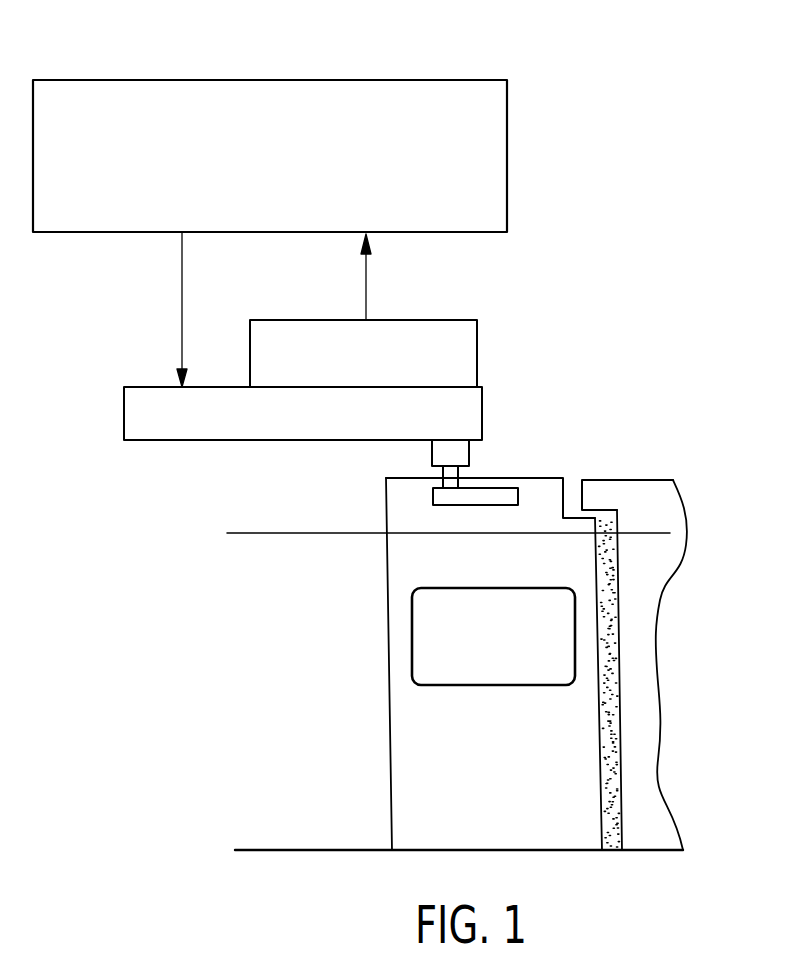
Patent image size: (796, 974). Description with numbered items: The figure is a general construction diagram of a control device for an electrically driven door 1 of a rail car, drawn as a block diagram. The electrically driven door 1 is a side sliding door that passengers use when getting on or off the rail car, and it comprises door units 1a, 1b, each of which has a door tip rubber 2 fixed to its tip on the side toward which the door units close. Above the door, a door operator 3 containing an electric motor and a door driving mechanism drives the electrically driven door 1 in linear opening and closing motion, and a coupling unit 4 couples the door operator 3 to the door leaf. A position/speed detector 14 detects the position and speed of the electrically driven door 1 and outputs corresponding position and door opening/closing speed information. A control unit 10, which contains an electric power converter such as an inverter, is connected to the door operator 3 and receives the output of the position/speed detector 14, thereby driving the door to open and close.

The control unit 10 is at (437, 80).
The position/speed detector 14 is at (424, 320).
The door operator 3 is at (123, 410).
The coupling unit 4 is at (433, 493).
The electrically driven door 1 is at (450, 664).
The door unit 1a is at (402, 755).
The door unit 1b is at (660, 588).
The door tip rubber 2 is at (612, 745).